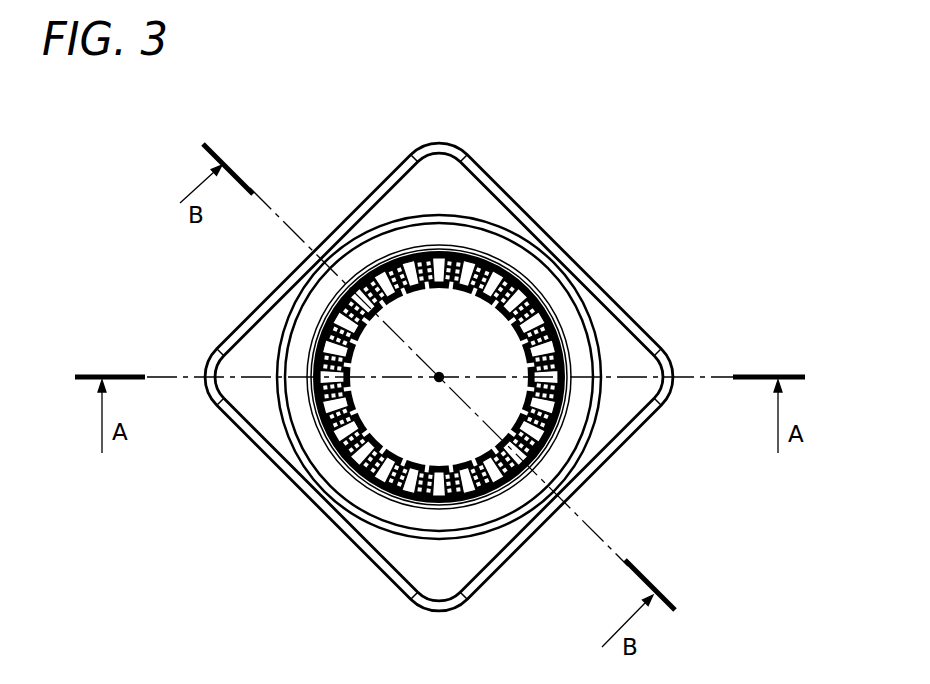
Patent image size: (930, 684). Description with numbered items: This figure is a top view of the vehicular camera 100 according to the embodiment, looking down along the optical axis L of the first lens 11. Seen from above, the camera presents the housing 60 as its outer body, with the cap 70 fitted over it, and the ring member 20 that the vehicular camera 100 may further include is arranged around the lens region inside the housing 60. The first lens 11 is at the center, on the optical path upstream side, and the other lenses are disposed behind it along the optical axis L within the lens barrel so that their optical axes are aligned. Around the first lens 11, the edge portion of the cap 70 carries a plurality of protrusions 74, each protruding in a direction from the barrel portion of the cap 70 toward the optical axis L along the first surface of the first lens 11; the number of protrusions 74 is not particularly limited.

The vehicular camera 100 is at (462, 331).
The first lens 11 is at (393, 297).
The ring member 20 is at (622, 355).
The housing 60 is at (362, 550).
The cap 70 is at (410, 213).
The protrusions 74 is at (556, 303).